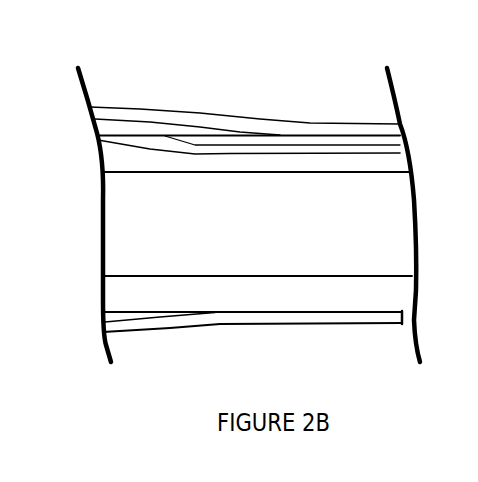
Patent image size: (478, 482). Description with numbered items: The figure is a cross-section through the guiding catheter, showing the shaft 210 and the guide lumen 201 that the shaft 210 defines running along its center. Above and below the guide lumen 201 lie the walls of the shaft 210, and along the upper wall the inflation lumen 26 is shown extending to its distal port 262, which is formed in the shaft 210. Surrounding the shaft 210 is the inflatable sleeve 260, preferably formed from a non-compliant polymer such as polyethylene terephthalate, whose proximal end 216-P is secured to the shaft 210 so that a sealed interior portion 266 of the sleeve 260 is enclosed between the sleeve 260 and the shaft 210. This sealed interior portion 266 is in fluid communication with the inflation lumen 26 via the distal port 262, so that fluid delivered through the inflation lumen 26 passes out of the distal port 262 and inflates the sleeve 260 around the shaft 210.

The guide lumen 201 is at (270, 228).
The sealed interior portion 266 is at (105, 127).
The inflatable sleeve 260 is at (128, 117).
The distal port 262 is at (147, 141).
The proximal end 216-P is at (317, 128).
The inflation lumen 26 is at (328, 153).
The shaft 210 is at (353, 292).